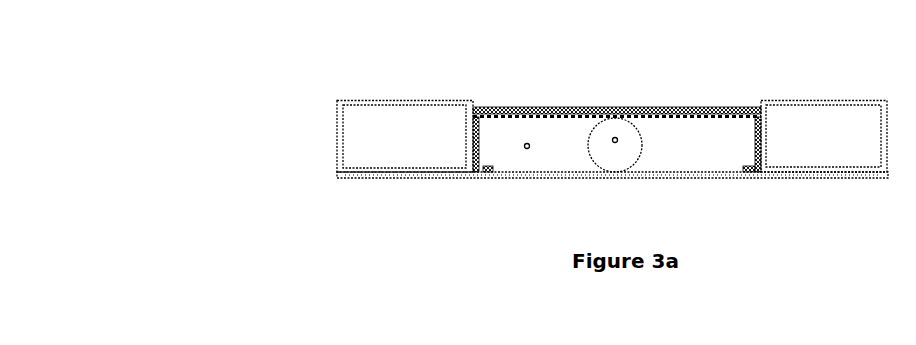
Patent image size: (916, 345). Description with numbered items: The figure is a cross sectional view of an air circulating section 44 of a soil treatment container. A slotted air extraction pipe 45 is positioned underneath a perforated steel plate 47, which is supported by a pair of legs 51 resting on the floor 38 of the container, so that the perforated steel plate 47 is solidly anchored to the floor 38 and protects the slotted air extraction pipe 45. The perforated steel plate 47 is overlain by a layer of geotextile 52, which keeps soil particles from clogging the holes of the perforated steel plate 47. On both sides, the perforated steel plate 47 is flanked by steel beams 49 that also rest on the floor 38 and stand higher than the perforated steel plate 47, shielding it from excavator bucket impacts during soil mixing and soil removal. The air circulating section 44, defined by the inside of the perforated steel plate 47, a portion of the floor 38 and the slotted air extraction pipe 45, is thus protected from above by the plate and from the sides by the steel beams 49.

The floor 38 is at (417, 181).
The air circulating section 44 is at (526, 143).
The slotted air extraction pipe 45 is at (613, 137).
The perforated steel plate 47 is at (655, 124).
The steel beam 49 is at (418, 99).
The legs 51 is at (487, 148).
The layer of geotextile 52 is at (654, 106).